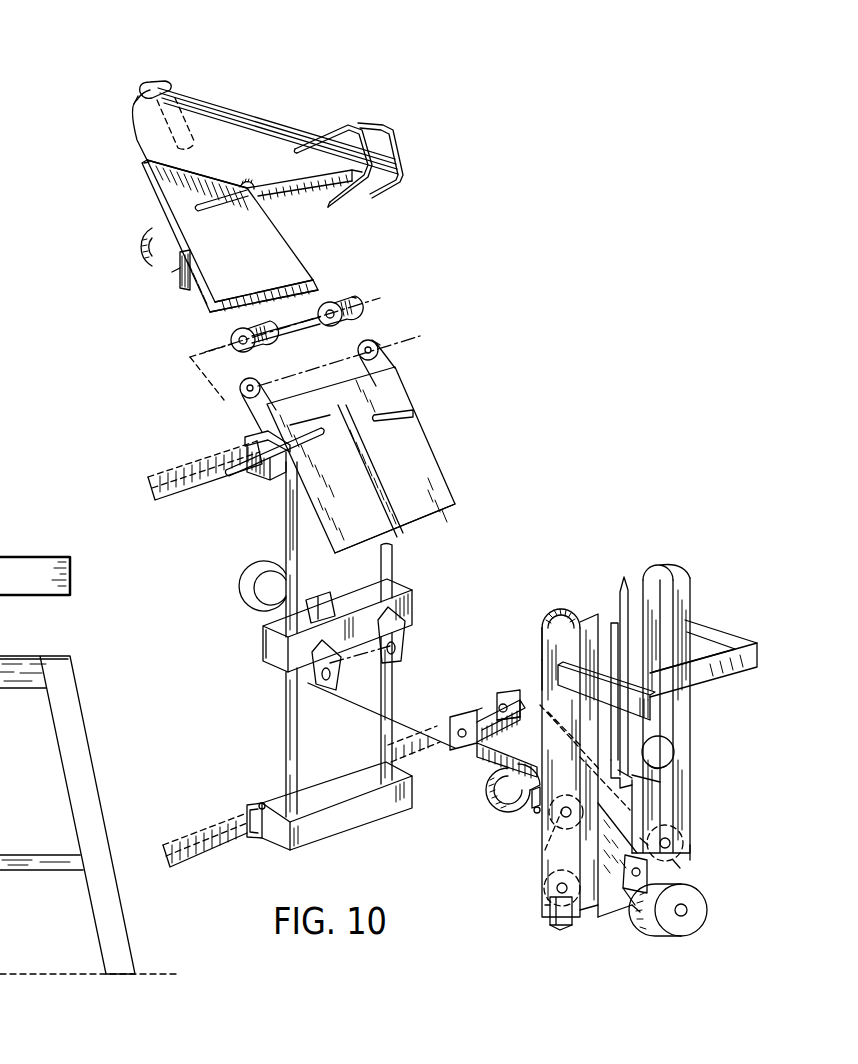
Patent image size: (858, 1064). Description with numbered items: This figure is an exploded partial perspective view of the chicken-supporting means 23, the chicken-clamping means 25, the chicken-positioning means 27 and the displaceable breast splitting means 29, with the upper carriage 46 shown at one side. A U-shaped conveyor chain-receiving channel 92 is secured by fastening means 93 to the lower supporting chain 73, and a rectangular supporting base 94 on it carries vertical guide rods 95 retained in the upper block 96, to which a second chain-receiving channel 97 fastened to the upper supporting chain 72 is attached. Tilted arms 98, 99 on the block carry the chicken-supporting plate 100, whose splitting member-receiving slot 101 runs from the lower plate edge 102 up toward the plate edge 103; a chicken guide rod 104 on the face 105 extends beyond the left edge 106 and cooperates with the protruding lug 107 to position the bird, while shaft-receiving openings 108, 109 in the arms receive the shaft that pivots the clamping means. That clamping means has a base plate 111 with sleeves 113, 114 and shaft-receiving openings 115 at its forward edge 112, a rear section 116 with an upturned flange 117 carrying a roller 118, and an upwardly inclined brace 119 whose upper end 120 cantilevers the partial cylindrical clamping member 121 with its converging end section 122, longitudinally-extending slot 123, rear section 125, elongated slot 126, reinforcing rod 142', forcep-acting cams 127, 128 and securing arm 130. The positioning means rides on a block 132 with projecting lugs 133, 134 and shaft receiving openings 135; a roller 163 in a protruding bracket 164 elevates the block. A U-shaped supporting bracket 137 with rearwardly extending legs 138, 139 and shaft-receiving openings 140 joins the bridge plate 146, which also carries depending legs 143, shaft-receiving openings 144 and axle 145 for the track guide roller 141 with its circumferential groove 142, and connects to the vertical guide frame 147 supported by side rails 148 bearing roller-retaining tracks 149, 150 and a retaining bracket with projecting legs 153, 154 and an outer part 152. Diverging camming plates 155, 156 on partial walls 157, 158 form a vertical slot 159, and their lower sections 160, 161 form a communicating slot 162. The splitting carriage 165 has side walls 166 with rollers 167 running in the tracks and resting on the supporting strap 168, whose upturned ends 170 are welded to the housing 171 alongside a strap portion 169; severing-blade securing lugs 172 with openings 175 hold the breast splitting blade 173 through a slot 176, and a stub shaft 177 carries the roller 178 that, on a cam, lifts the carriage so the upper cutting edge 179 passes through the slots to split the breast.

The chicken-supporting means 23 is at (430, 438).
The chicken-clamping means 25 is at (148, 185).
The chicken-positioning means 27 is at (688, 798).
The breast splitting means 29 is at (673, 865).
The upper carriage 46 is at (36, 592).
The upper supporting chain 72 is at (163, 472).
The lower supporting chain 73 is at (200, 832).
The conveyor chain-receiving channel 92 is at (278, 796).
The fastening means 93 is at (258, 800).
The supporting base 94 is at (340, 822).
The guide rods 95 is at (381, 720).
The upper block 96 is at (274, 474).
The chain-receiving channel 97 is at (247, 436).
The upwardly extending arm 98 is at (250, 378).
The upwardly extending arm 99 is at (378, 348).
The chicken-supporting plate 100 is at (393, 380).
The splitting member-receiving slot 101 is at (423, 497).
The lower plate edge 102 is at (452, 518).
The plate edge 103 is at (310, 382).
The chicken guide rod 104 is at (233, 478).
The face 105 is at (343, 482).
The left edge 106 is at (300, 506).
The protruding lug 107 is at (413, 418).
The shaft-receiving opening 108 is at (240, 398).
The shaft-receiving opening 109 is at (372, 340).
The base plate 111 is at (320, 288).
The forward edge 112 is at (273, 298).
The sleeve 113 is at (238, 328).
The sleeve 114 is at (348, 297).
The shaft-receiving openings 115 is at (240, 342).
The rear section 116 is at (180, 274).
The upturned flange 117 is at (180, 253).
The roller 118 is at (147, 233).
The upwardly inclined brace 119 is at (259, 268).
The upper end 120 is at (148, 170).
The clamping member 121 is at (243, 164).
The converging end section 122 is at (312, 200).
The longitudinally-extending slot 123 is at (258, 120).
The rear section 125 is at (136, 102).
The elongated slot 126 is at (190, 127).
The forcep-acting cam 127 is at (323, 126).
The forcep-acting cam 128 is at (372, 120).
The securing arm 130 is at (215, 210).
The block 132 is at (403, 580).
The projecting lug 133 is at (308, 673).
The projecting lug 134 is at (407, 648).
The shaft receiving openings 135 is at (312, 656).
The U-shaped supporting bracket 137 is at (512, 703).
The rearwardly extending leg 138 is at (498, 706).
The rearwardly extending leg 139 is at (460, 730).
The shaft-receiving openings 140 is at (483, 699).
The track guide roller 141 is at (533, 812).
The circumferential groove 142 is at (469, 798).
The reinforcing rod 142' is at (113, 82).
The depending legs 143 is at (493, 770).
The shaft-receiving openings 144 is at (533, 815).
The axle 145 is at (540, 808).
The bridge plate 146 is at (490, 760).
The vertical guide frame 147 is at (620, 700).
The side rails 148 is at (688, 788).
The roller-retaining track 149 is at (597, 620).
The roller-retaining track 150 is at (663, 562).
The frame 152 is at (752, 652).
The projecting leg 153 is at (662, 660).
The projecting leg 154 is at (705, 620).
The camming plate 155 is at (600, 626).
The camming plate 156 is at (620, 578).
The partial wall 157 is at (643, 587).
The partial wall 158 is at (578, 614).
The vertical slot 159 is at (613, 625).
The lower section 160 is at (665, 780).
The lower section 161 is at (632, 788).
The slot 162 is at (622, 777).
The roller 163 is at (255, 578).
The protruding bracket 164 is at (326, 584).
The carriage 165 is at (607, 927).
The side walls 166 is at (672, 740).
The rollers 167 is at (667, 726).
The supporting strap 168 is at (557, 920).
The pin 169 is at (690, 852).
The upturned ends 170 is at (552, 907).
The housing 171 is at (540, 632).
The severing-blade securing lugs 172 is at (633, 895).
The breast splitting blade 173 is at (640, 845).
The openings 175 is at (695, 878).
The slot 176 is at (632, 808).
The stub shaft 177 is at (630, 900).
The roller 178 is at (680, 930).
The upper cutting edge 179 is at (538, 667).